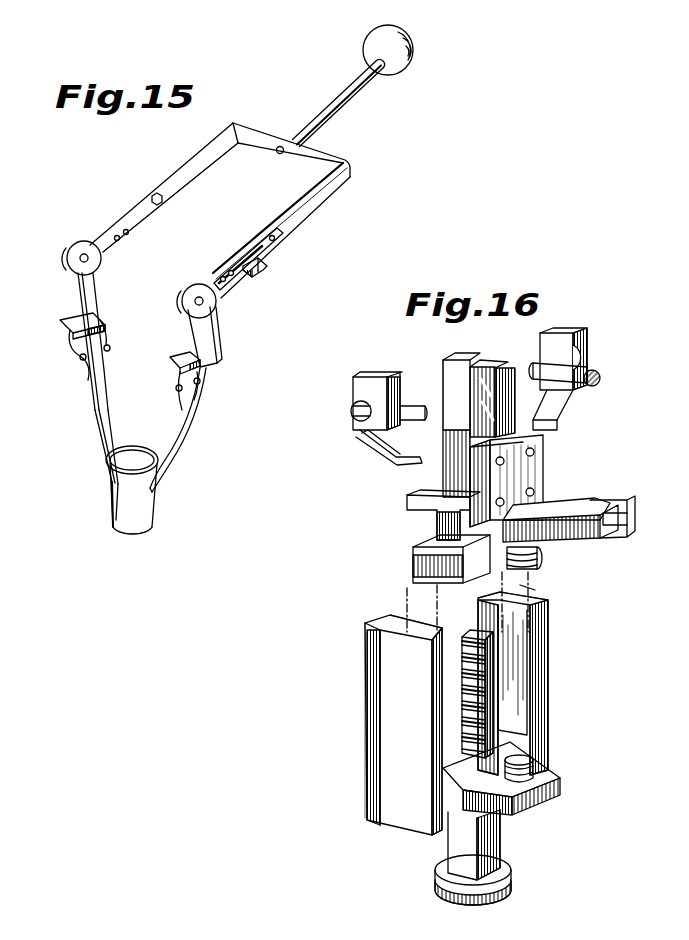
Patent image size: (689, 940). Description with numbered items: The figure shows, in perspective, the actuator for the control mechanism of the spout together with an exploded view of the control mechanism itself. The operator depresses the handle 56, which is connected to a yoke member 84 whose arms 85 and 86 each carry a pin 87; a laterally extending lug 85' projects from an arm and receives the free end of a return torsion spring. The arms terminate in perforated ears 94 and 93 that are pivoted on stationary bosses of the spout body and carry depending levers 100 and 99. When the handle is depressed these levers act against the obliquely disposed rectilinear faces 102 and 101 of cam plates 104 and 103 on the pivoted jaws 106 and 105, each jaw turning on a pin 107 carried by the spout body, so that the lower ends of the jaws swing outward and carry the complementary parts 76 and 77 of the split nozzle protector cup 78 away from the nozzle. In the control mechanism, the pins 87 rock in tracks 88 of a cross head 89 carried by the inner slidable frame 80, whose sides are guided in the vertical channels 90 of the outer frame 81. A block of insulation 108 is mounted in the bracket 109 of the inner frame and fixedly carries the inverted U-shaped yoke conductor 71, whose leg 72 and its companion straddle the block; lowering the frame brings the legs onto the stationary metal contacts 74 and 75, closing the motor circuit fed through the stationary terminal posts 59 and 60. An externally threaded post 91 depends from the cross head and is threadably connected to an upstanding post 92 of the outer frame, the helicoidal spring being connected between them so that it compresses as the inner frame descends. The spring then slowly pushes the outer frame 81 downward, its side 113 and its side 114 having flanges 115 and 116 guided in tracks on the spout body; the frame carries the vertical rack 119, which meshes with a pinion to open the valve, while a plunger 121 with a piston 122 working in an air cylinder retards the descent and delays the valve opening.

In FIG. 15, the handle 56 is at (355, 88).
In FIG. 15, the yoke member 84 is at (335, 152).
In FIG. 15, the arm 85 is at (278, 226).
In FIG. 15, the laterally extending lug 85' is at (275, 264).
In FIG. 15, the arm 86 is at (198, 172).
In FIG. 15, the pin 87 is at (163, 200).
In FIG. 15, the perforated enlargement or ear 94 is at (68, 263).
In FIG. 15, the perforated enlargement or ear 93 is at (216, 304).
In FIG. 15, the depending lever 100 is at (100, 305).
In FIG. 15, the pivoted jaw 106 is at (90, 388).
In FIG. 15, the depending lever 99 is at (214, 338).
In FIG. 15, the obliquely disposed rectilinear face 101 is at (186, 354).
In FIG. 15, the obliquely disposed rectilinear face 102 is at (62, 323).
In FIG. 15, the cam plate 103 is at (172, 370).
In FIG. 15, the cam plate 104 is at (78, 338).
In FIG. 15, the pivoted jaw 105 is at (189, 421).
In FIG. 15, the pin 107 is at (137, 342).
In FIG. 15, the complementary part of split nozzle protector 76 is at (152, 510).
In FIG. 15, the complementary part of split nozzle protector 77 is at (107, 500).
In FIG. 15, the split nozzle protector or cap 78 is at (131, 532).
In FIG. 16, the stationary terminal conductor or post 59 is at (413, 404).
In FIG. 16, the stationary metal contact 74 is at (400, 463).
In FIG. 16, the inverted U-shaped metal adapter or yoke 71 is at (461, 354).
In FIG. 16, the leg of yoke 72 is at (450, 377).
In FIG. 16, the block of insulation 108 is at (513, 373).
In FIG. 16, the stationary terminal conductor or post 60 is at (600, 375).
In FIG. 16, the stationary metal contact 75 is at (560, 417).
In FIG. 16, the bracket 109 is at (530, 461).
In FIG. 16, the cross head 89 is at (540, 524).
In FIG. 16, the track 88 is at (628, 527).
In FIG. 16, the inner slidable frame 80 is at (430, 508).
In FIG. 16, the externally threaded post 91 is at (542, 556).
In FIG. 16, the flange 116 is at (520, 590).
In FIG. 16, the side of outer frame 114 is at (548, 600).
In FIG. 16, the vertical channel 90 is at (540, 600).
In FIG. 16, the outer frame 81 is at (395, 697).
In FIG. 16, the flange 115 is at (366, 748).
In FIG. 16, the side of outer frame 113 is at (400, 778).
In FIG. 16, the vertical rack 119 is at (486, 688).
In FIG. 16, the upstanding post 92 is at (530, 764).
In FIG. 16, the plunger 121 is at (500, 843).
In FIG. 16, the piston 122 is at (512, 887).